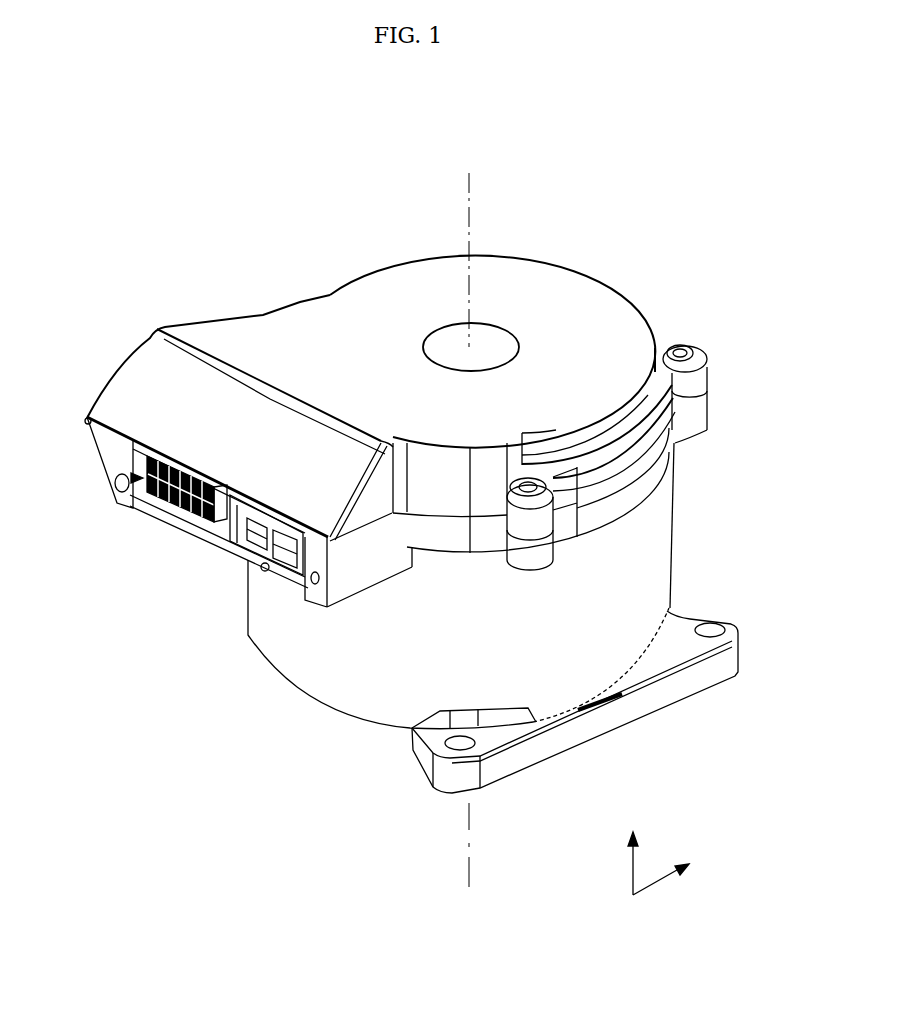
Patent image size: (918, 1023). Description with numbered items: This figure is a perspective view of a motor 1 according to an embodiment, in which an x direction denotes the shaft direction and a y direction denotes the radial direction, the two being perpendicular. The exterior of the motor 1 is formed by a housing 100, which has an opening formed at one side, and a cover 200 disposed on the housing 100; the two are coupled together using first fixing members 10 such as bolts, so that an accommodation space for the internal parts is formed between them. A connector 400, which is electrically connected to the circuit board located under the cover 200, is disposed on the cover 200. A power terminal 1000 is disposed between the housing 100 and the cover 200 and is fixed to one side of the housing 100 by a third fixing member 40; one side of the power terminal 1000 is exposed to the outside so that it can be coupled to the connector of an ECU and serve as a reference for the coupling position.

The motor 1 is at (115, 101).
The first fixing member 10 is at (695, 352).
The third fixing member 40 is at (262, 567).
The housing 100 is at (603, 650).
The cover 200 is at (268, 336).
The connector 400 is at (120, 486).
The power terminal 1000 is at (213, 532).